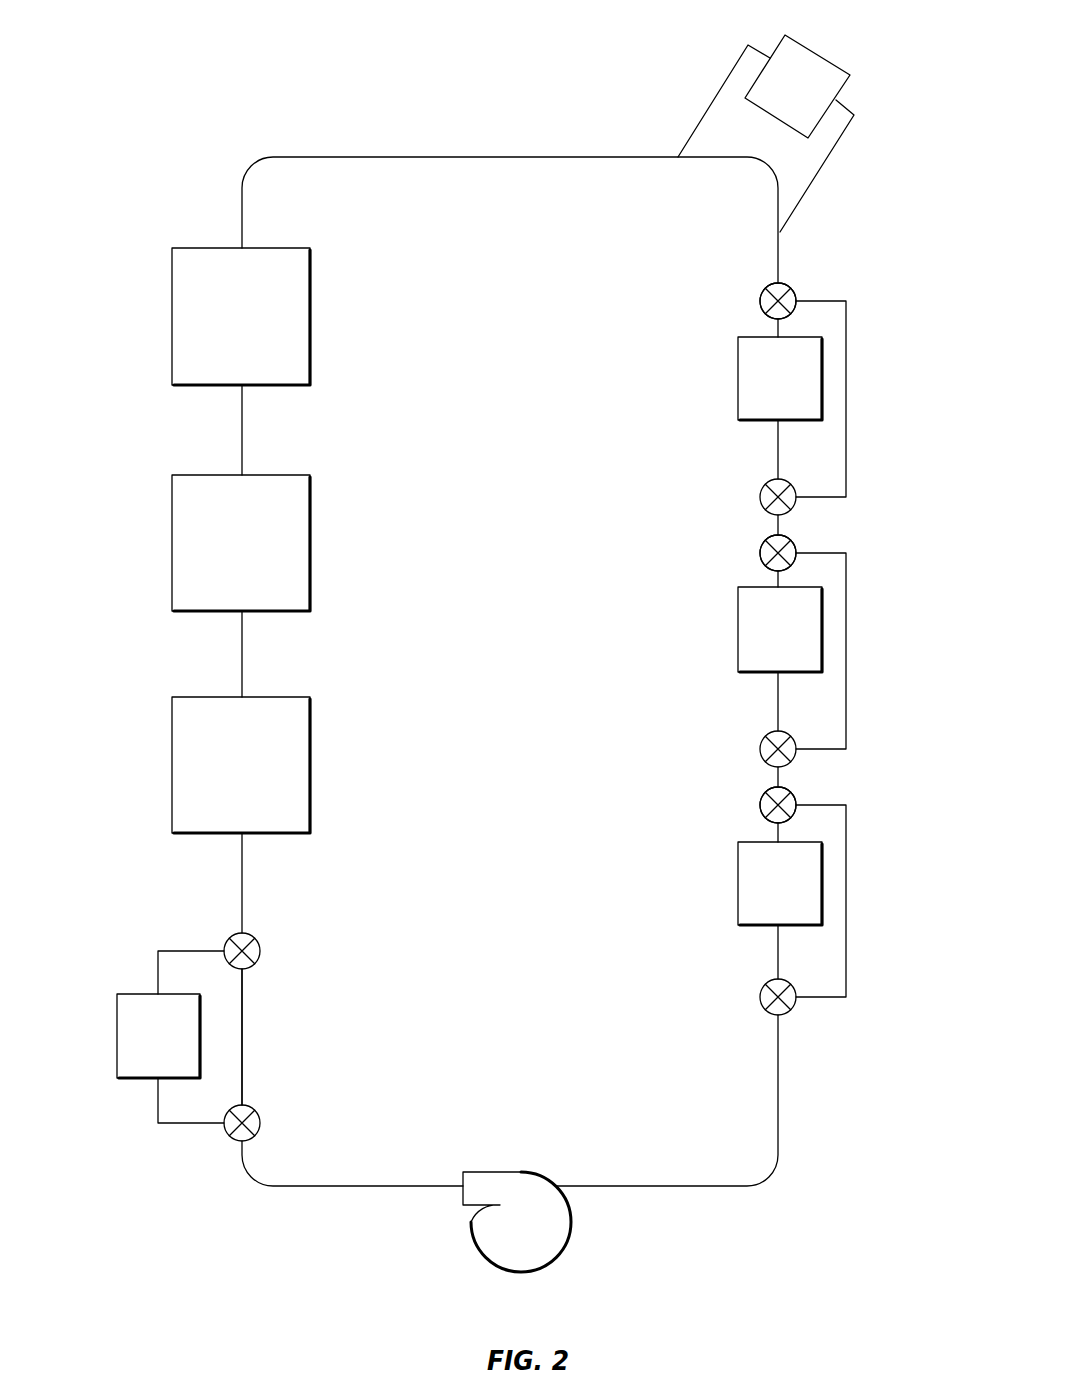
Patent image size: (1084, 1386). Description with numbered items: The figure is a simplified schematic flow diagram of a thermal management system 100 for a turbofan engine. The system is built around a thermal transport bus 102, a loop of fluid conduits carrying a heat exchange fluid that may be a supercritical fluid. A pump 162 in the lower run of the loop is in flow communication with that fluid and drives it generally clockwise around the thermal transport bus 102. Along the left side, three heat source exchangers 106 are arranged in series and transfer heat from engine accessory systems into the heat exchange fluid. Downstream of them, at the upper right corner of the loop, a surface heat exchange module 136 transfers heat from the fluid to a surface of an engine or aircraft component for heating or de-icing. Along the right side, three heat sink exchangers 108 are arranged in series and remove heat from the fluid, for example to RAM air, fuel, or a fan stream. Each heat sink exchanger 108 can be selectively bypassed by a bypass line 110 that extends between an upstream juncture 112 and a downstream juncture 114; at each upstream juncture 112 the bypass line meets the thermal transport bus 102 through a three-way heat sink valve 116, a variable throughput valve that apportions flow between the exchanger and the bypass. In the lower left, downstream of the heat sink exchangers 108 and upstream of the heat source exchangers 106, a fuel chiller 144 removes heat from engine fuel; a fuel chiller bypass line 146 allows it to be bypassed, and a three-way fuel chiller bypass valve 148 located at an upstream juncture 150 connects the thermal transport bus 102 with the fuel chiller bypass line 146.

The thermal management system 100 is at (142, 78).
The thermal transport bus 102 is at (298, 157).
The heat source exchanger 106 is at (172, 322).
The heat sink exchanger 108 is at (738, 380).
The bypass line 110 is at (846, 370).
The upstream juncture 112 is at (805, 289).
The downstream juncture 114 is at (805, 511).
The three-way heat sink valve 116 is at (762, 301).
The surface heat exchange module 136 is at (822, 58).
The fuel chiller 144 is at (117, 1038).
The fuel chiller bypass line 146 is at (244, 1048).
The three-way fuel chiller bypass valve 148 is at (260, 1123).
The upstream juncture 150 is at (222, 1153).
The pump 162 is at (518, 1172).